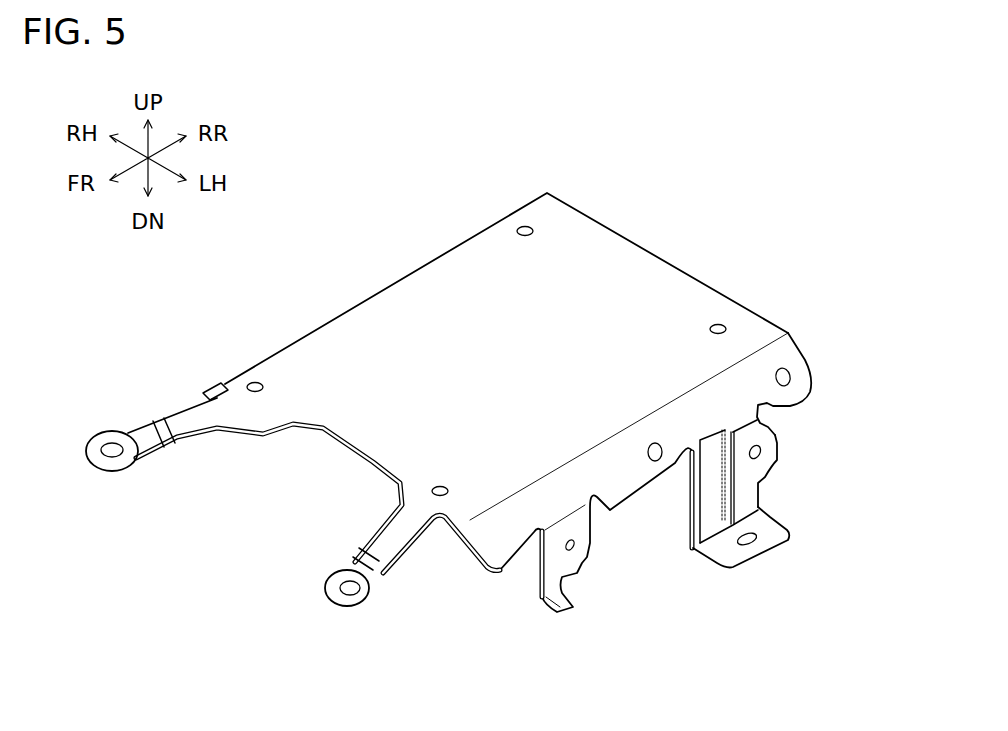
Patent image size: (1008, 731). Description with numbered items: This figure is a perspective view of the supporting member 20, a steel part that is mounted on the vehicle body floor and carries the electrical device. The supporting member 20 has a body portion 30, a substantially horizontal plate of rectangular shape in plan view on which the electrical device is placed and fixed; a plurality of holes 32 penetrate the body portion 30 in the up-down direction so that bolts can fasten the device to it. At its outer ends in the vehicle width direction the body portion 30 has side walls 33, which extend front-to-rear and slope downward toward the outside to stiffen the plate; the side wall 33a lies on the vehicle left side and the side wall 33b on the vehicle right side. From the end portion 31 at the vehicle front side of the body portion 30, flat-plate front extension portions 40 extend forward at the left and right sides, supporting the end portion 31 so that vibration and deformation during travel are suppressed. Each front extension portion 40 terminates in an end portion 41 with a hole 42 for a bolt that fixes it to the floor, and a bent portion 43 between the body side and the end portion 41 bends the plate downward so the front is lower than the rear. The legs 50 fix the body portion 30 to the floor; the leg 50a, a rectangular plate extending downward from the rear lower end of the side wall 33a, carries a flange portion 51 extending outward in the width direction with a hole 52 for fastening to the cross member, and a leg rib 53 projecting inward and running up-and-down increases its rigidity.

The supporting member 20 is at (700, 236).
The body portion 30 is at (450, 302).
The end portion 31 is at (356, 430).
The holes 32 is at (525, 226).
The side walls 33 is at (530, 359).
The side wall 33a is at (750, 388).
The side wall 33b is at (213, 382).
The front extension portions 40 is at (183, 418).
The end portions 41 is at (100, 432).
The holes 42 is at (110, 458).
The bent portion 43 is at (161, 437).
The legs 50 is at (777, 508).
The leg 50a is at (745, 494).
The flange portion 51 is at (774, 527).
The hole 52 is at (757, 543).
The leg rib 53 is at (712, 497).